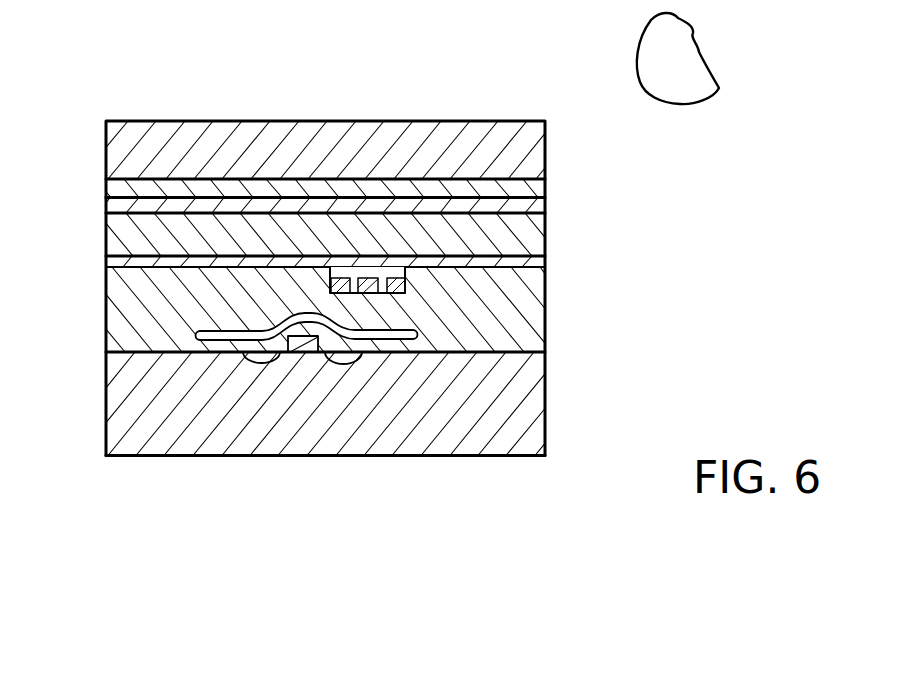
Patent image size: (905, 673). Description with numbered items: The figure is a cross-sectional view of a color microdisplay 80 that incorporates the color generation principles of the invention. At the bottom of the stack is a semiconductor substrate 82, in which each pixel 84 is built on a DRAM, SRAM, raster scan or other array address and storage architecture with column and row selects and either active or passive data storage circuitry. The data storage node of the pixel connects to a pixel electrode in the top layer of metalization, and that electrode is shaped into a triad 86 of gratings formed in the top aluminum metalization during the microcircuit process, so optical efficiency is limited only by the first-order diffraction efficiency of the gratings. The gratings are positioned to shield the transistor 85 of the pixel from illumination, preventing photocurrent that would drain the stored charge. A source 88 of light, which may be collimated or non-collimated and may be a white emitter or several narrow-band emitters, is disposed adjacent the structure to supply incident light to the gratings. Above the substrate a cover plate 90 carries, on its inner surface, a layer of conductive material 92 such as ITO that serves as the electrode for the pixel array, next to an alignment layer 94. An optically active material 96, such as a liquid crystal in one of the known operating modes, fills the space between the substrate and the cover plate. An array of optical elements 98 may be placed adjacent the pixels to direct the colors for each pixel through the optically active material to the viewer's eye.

The color microdisplay 80 is at (682, 288).
The semiconductor substrate 82 is at (534, 414).
The pixel 84 is at (295, 452).
The transistor 85 is at (307, 352).
The triad of gratings 86 is at (383, 258).
The source of light 88 is at (707, 92).
The cover plate 90 is at (530, 148).
The layer of conductive material 92 is at (106, 186).
The alignment layer 94 is at (106, 206).
The optically active material 96 is at (118, 246).
The array of optical elements 98 is at (530, 262).